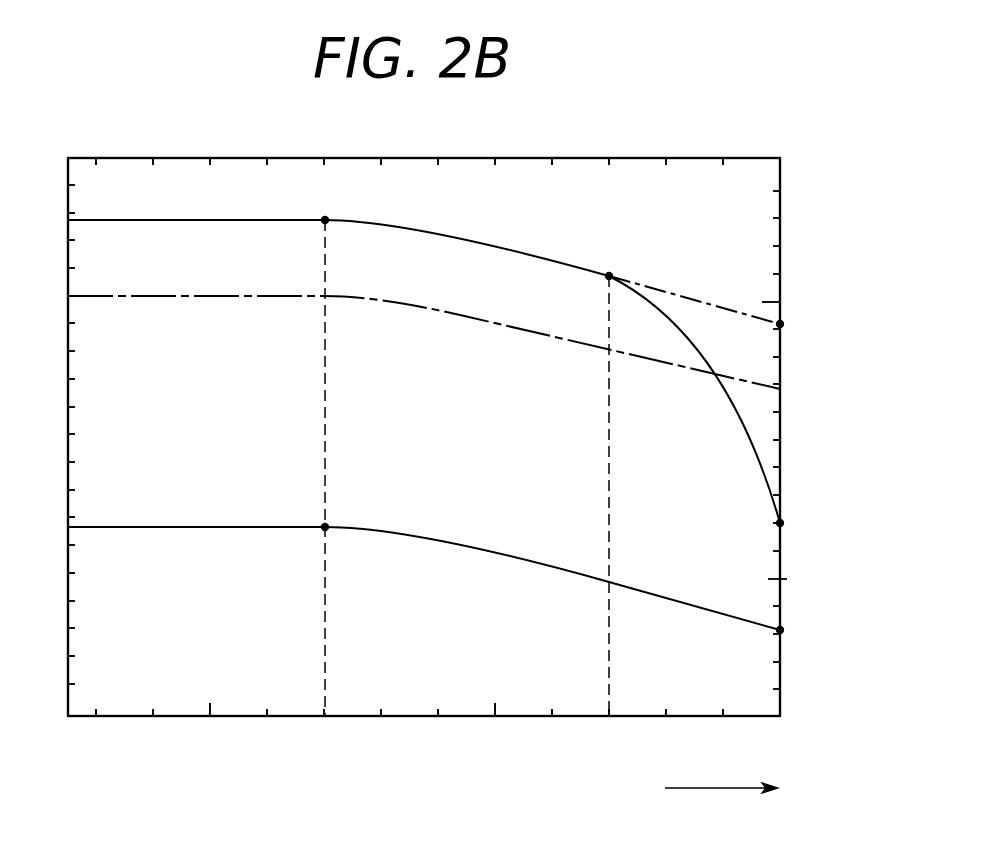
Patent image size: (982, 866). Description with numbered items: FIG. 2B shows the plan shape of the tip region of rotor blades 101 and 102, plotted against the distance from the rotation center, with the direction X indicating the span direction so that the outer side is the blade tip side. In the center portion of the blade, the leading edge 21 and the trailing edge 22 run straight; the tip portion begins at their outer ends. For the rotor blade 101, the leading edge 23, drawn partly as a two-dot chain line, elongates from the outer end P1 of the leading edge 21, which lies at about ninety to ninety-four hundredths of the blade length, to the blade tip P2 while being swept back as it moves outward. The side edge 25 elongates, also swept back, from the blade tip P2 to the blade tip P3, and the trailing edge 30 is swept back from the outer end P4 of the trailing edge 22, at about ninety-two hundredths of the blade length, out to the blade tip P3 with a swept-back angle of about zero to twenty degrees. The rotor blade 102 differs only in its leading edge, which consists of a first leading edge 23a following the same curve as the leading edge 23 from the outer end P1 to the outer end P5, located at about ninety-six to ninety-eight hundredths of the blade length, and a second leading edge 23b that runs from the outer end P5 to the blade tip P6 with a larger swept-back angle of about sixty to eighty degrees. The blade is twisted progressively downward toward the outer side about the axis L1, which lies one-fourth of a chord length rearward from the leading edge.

The leading edge of the center portion 21 is at (140, 220).
The trailing edge of the center portion 22 is at (115, 527).
The leading edge 23 is at (718, 303).
The first leading edge 23a is at (518, 250).
The second leading edge 23b is at (727, 407).
The side edge 25 is at (787, 579).
The trailing edge 30 is at (503, 557).
The rotor blade 101 is at (742, 140).
The rotor blade 102 is at (438, 455).
The outer end of the leading edge P1 is at (325, 220).
The blade tip P2 is at (780, 324).
The blade tip P3 is at (780, 630).
The outer end of the trailing edge P4 is at (327, 529).
The outer end of the first leading edge P5 is at (609, 276).
The blade tip P6 is at (780, 523).
The axis L1 is at (645, 360).
The direction X is at (720, 788).